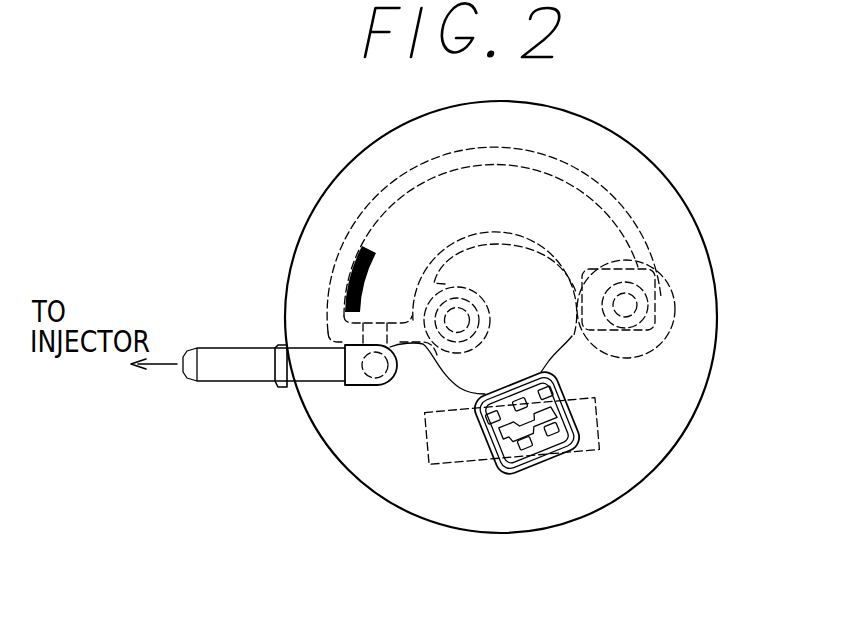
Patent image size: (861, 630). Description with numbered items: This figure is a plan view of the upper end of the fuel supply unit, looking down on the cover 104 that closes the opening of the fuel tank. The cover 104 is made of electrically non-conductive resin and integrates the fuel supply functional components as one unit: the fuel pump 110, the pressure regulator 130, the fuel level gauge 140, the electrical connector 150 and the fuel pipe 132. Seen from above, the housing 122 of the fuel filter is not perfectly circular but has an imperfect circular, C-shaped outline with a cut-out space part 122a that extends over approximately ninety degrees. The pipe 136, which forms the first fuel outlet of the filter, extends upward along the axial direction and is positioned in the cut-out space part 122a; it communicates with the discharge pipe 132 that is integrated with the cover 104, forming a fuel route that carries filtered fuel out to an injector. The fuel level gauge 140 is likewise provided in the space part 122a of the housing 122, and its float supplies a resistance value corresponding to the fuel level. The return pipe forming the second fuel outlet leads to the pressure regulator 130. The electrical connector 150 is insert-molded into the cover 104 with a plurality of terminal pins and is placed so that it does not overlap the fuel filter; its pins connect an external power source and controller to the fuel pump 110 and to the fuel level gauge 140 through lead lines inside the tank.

The cover 104 is at (627, 160).
The housing 122 is at (637, 220).
The cut-out space part 122a is at (633, 375).
The pressure regulator 130 is at (587, 340).
The fuel pump 110 is at (557, 353).
The discharge pipe 132 is at (231, 373).
The pipe 136 is at (357, 428).
The fuel level gauge 140 is at (448, 462).
The electrical connector 150 is at (528, 477).